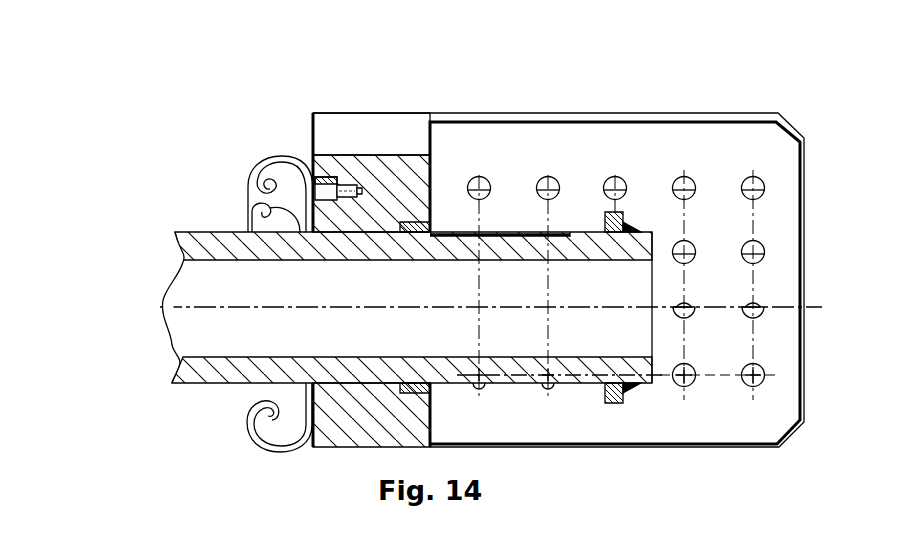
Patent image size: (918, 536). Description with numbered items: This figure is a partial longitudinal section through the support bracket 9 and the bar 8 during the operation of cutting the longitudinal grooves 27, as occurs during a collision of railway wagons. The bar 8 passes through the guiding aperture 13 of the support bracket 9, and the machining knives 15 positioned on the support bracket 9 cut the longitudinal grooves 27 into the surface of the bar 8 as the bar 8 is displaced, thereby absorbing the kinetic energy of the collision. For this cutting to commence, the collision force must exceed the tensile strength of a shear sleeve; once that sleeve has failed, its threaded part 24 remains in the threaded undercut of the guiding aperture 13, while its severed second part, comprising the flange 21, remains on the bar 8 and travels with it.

The guiding aperture 13 is at (279, 308).
The bar 8 is at (268, 241).
The machining knives 15 is at (313, 212).
The support bracket 9 is at (368, 135).
The threaded part 24 is at (418, 222).
The longitudinal grooves 27 is at (515, 233).
The flange 21 is at (614, 218).